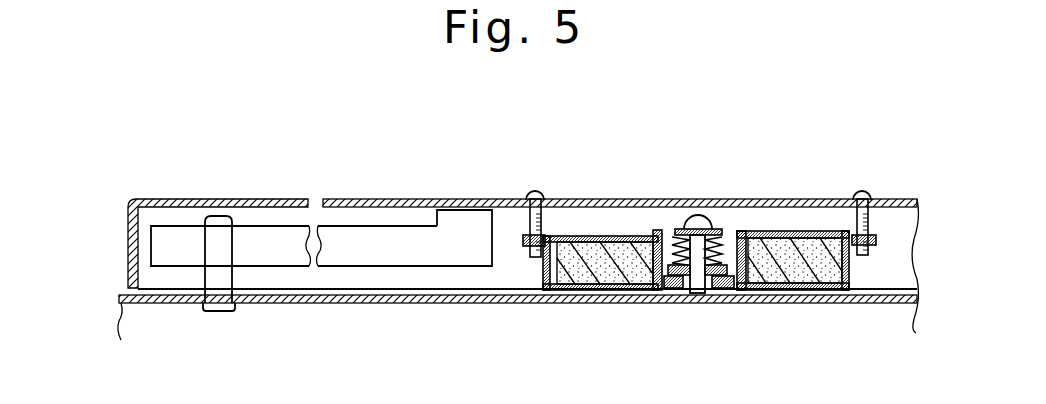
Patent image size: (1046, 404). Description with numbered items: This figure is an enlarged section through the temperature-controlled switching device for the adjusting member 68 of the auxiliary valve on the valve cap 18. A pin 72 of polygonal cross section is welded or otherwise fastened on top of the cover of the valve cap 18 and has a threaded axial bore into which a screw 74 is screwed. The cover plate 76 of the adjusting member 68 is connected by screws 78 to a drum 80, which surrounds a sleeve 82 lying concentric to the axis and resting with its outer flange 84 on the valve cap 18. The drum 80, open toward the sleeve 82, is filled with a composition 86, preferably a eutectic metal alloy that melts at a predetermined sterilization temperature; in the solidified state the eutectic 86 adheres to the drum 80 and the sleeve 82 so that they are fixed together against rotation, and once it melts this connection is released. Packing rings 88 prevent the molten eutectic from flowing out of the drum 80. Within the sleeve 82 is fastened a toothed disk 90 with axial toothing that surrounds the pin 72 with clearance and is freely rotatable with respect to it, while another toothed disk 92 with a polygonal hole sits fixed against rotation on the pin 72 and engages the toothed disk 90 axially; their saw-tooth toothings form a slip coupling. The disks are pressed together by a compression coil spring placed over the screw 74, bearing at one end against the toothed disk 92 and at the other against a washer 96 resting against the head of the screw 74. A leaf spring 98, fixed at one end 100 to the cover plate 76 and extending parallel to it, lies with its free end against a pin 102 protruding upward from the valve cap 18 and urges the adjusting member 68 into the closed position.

The valve cap 18 is at (150, 305).
The adjusting member 68 is at (128, 248).
The pin 72 is at (698, 296).
The screw 74 is at (697, 222).
The cover plate 76 is at (577, 199).
The screws 78 is at (530, 213).
The drum 80 is at (848, 270).
The sleeve 82 is at (740, 231).
The outer flange 84 is at (772, 290).
The composition 86 is at (560, 266).
The packing rings 88 is at (632, 262).
The toothed disk 90 is at (675, 268).
The toothed disk 92 is at (660, 230).
The washer 96 is at (677, 232).
The leaf spring 98 is at (263, 235).
The end 100 is at (463, 212).
The pin 102 is at (228, 282).